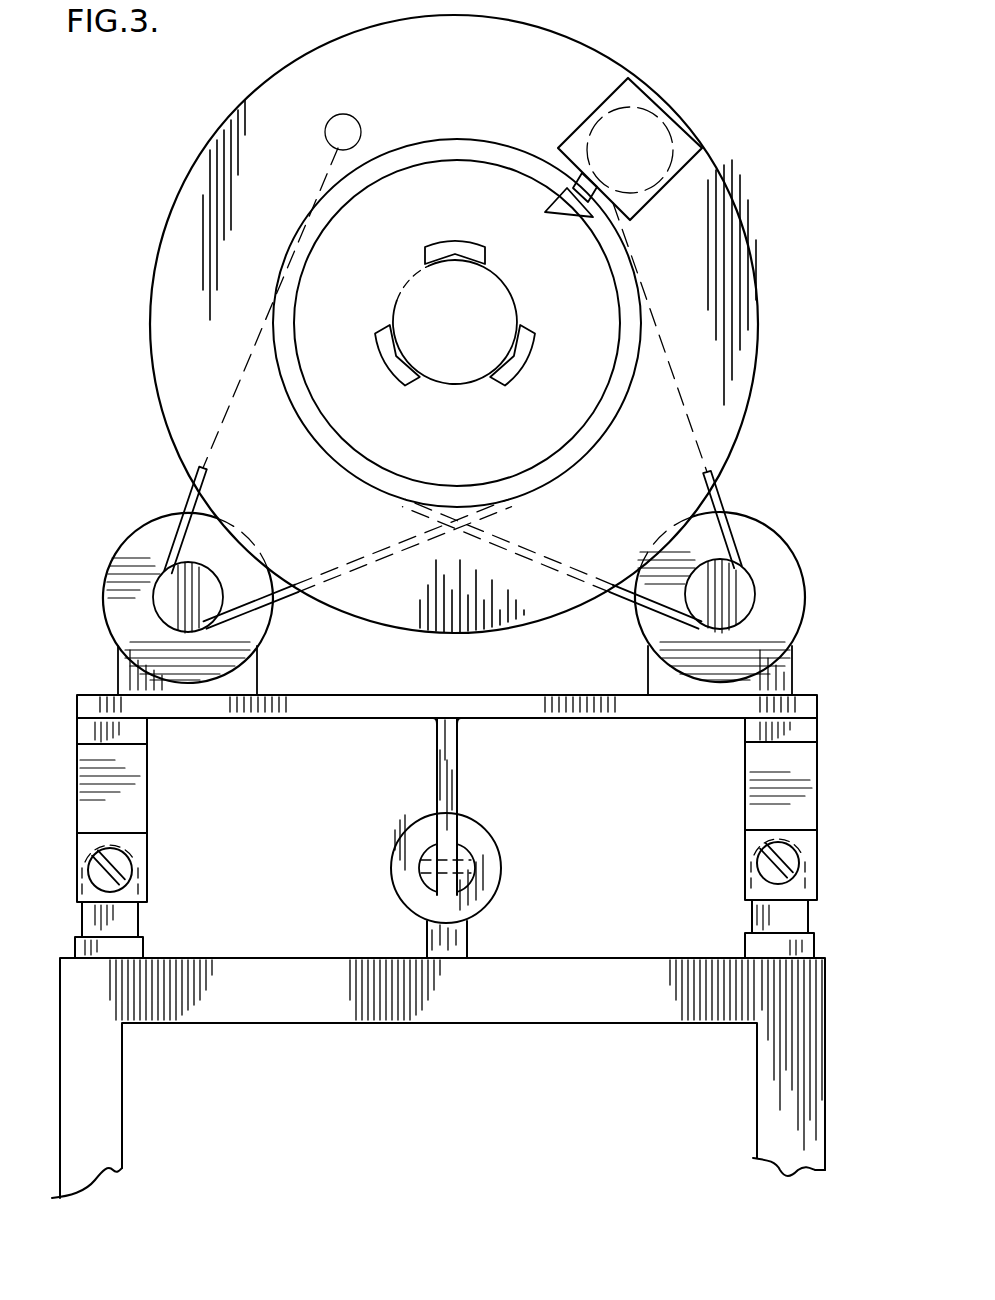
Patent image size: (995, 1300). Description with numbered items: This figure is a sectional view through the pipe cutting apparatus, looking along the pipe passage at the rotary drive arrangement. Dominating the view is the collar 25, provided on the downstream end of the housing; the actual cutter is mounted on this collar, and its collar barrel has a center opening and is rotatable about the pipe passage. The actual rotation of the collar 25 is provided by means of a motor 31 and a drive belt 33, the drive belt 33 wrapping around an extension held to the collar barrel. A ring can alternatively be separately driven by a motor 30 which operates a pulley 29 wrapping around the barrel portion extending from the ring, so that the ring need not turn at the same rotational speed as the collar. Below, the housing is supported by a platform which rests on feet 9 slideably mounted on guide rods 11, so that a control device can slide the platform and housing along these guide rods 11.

The feet 9 is at (133, 788).
The guide rods 11 is at (120, 866).
The collar 25 is at (738, 393).
The pulley 29 is at (187, 507).
The motor 30 is at (112, 598).
The motor 31 is at (785, 575).
The drive belt 33 is at (718, 498).